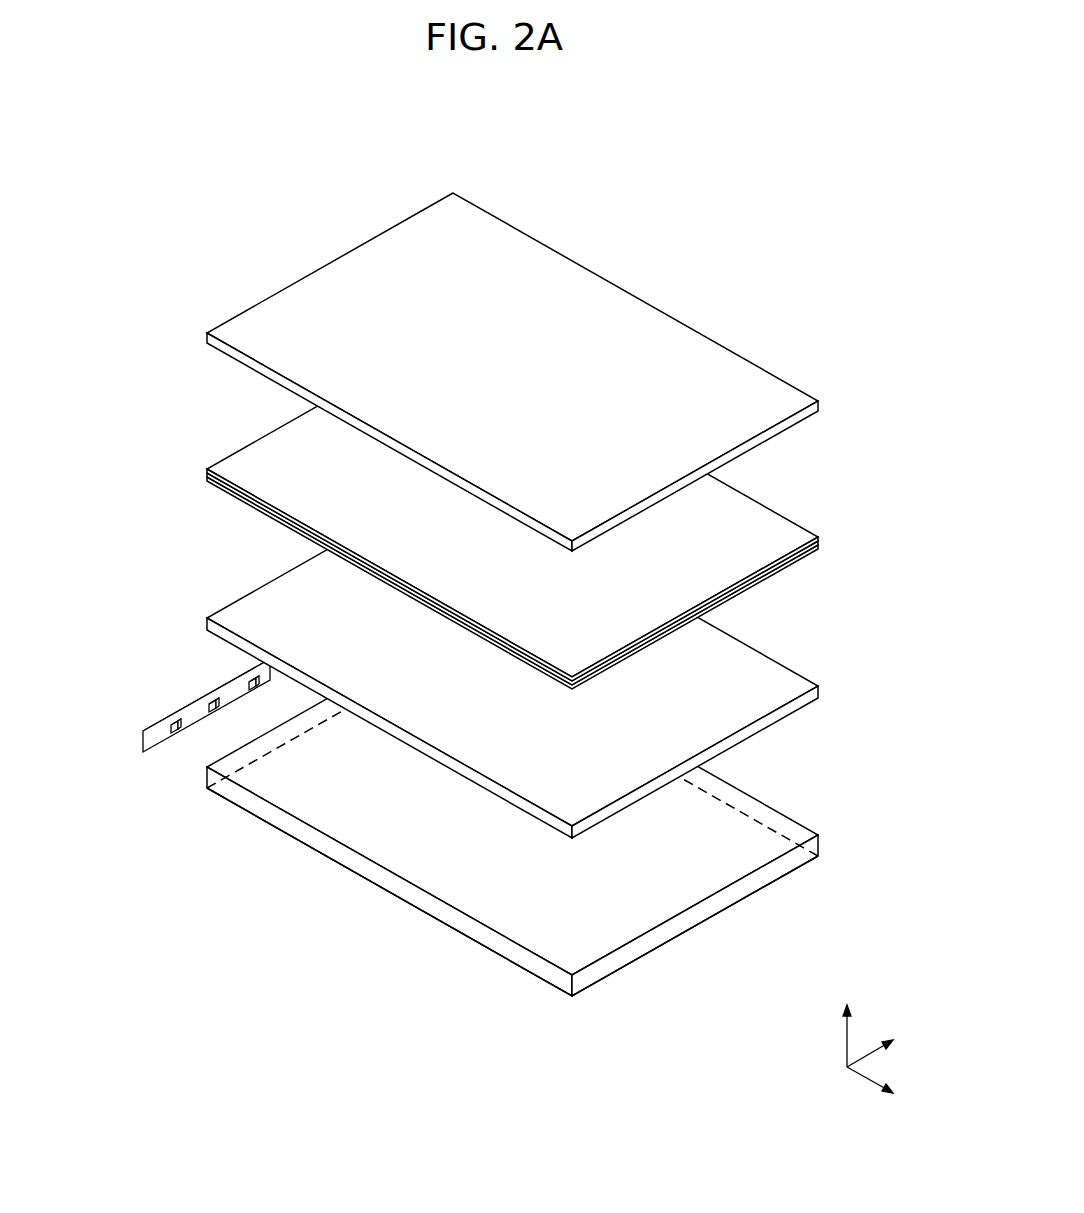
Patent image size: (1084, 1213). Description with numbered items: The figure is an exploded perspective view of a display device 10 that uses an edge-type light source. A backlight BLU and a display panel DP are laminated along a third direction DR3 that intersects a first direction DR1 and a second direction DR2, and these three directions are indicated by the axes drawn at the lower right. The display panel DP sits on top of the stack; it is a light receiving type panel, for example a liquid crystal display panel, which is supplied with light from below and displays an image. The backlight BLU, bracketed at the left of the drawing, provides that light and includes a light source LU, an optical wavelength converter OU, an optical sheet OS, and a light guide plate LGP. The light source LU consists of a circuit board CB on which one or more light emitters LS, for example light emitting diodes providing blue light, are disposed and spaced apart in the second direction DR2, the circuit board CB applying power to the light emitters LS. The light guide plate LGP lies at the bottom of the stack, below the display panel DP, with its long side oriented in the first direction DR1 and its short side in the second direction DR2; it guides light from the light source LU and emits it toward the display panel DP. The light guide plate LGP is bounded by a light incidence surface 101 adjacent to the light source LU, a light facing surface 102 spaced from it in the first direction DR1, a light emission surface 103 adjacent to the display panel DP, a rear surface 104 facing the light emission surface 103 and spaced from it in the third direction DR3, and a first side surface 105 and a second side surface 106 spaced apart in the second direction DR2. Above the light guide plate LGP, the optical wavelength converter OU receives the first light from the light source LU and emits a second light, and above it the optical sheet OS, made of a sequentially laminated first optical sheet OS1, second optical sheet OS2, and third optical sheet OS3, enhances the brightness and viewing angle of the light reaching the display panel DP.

The display device 10 is at (500, 589).
The display panel DP is at (820, 404).
The optical sheet OS is at (579, 509).
The first optical sheet OS1 is at (819, 550).
The second optical sheet OS2 is at (819, 546).
The third optical sheet OS3 is at (819, 542).
The optical wavelength converter OU is at (826, 691).
The light guide plate LGP is at (536, 820).
The backlight BLU is at (500, 735).
The light source LU is at (193, 667).
The light emitter LS is at (175, 724).
The circuit board CB is at (197, 718).
The light incidence surface 101 is at (233, 765).
The light facing surface 102 is at (705, 910).
The light emission surface 103 is at (455, 860).
The rear surface 104 is at (495, 952).
The first side surface 105 is at (353, 862).
The second side surface 106 is at (836, 851).
The first direction DR1 is at (892, 1086).
The second direction DR2 is at (892, 1046).
The third direction DR3 is at (846, 1024).